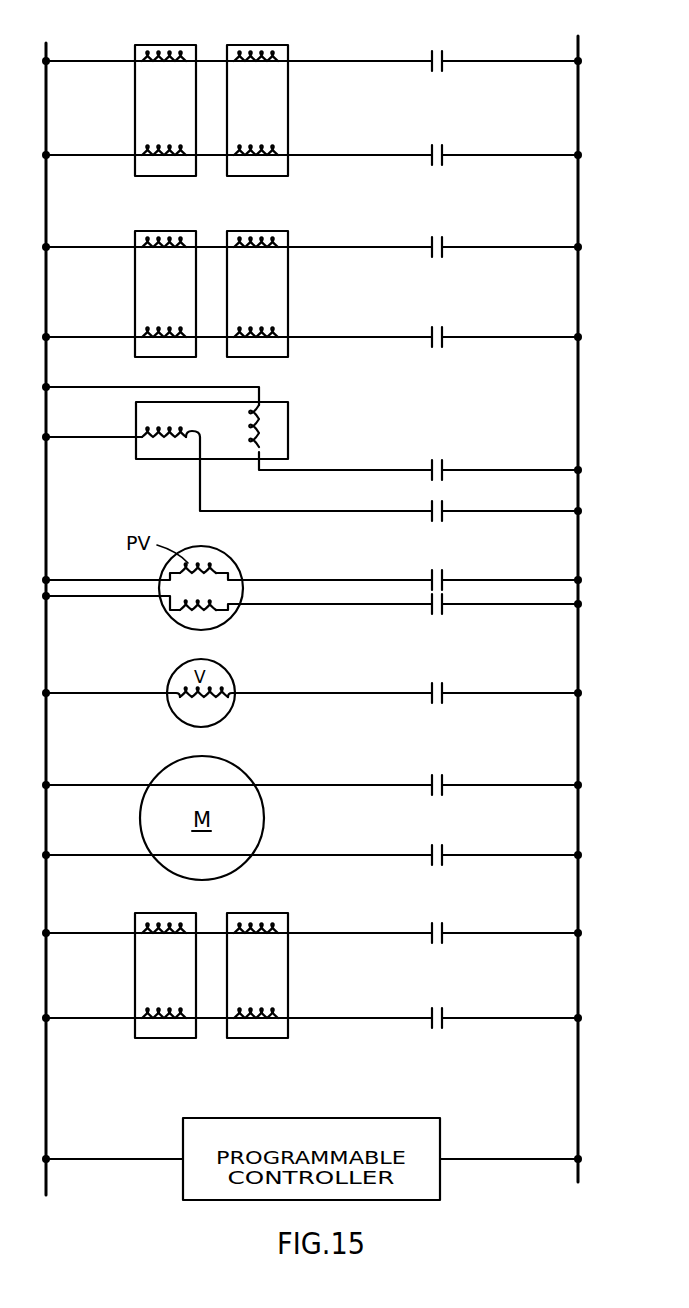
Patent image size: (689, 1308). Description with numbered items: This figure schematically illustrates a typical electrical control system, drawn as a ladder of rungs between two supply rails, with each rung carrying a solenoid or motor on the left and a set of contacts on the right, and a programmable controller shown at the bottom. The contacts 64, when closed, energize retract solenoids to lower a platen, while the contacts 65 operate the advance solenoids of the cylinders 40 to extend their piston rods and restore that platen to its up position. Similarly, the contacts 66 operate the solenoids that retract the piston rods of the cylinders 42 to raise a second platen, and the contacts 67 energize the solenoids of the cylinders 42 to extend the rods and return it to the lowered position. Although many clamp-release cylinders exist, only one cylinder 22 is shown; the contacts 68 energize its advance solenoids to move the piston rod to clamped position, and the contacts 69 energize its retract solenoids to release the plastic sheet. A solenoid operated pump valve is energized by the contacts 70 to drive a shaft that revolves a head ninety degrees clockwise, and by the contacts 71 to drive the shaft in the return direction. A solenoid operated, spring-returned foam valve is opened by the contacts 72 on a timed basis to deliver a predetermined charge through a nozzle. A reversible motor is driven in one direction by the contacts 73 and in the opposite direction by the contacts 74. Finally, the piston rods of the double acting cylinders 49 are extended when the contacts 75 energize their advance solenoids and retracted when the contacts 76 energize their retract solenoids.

The cylinders 40 is at (249, 51).
The cylinders 42 is at (251, 239).
The cylinders 22 is at (282, 421).
The double acting cylinders 49 is at (249, 924).
The contacts 64 is at (442, 51).
The contacts 65 is at (442, 145).
The contacts 66 is at (442, 237).
The contacts 67 is at (442, 327).
The contacts 68 is at (442, 460).
The contacts 69 is at (443, 501).
The contacts 70 is at (442, 570).
The contacts 71 is at (440, 615).
The contacts 72 is at (442, 681).
The contacts 73 is at (441, 775).
The contacts 74 is at (441, 845).
The contacts 75 is at (441, 923).
The contacts 76 is at (441, 1010).